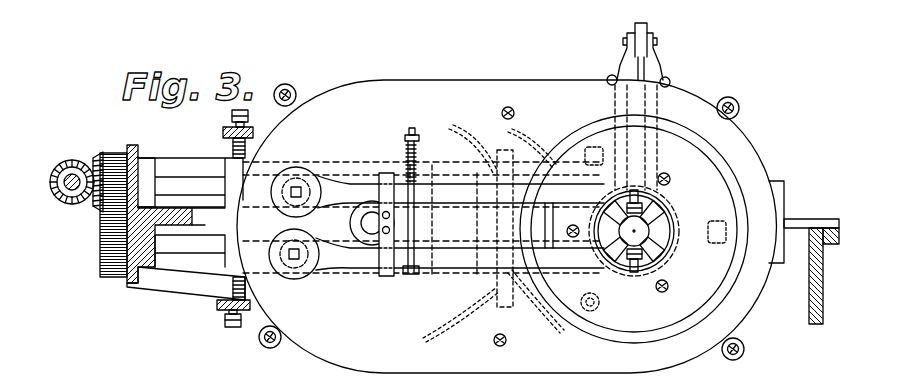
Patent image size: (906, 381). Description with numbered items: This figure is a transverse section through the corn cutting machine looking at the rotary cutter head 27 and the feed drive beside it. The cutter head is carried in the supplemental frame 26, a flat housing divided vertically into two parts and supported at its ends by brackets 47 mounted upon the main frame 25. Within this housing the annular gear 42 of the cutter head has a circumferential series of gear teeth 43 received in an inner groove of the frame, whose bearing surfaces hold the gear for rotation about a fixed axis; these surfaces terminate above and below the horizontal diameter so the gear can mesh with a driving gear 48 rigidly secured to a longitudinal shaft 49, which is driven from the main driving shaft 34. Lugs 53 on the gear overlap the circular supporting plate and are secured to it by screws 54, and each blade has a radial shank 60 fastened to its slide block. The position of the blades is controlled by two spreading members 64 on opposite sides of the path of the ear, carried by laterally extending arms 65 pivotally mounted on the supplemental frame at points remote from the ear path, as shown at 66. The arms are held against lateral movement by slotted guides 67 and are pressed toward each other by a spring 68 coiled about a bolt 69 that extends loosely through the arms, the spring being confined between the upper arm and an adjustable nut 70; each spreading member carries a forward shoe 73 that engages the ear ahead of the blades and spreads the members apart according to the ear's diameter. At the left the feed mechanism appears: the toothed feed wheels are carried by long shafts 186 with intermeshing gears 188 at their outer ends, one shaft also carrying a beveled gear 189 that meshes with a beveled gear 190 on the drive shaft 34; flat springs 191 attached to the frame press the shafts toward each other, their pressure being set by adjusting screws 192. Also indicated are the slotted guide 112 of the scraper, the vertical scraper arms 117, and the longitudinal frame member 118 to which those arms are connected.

The main frame 25 is at (147, 282).
The supplemental frame 26 is at (634, 229).
The rotary cutter head 27 is at (740, 168).
The main driving shaft 34 is at (61, 205).
The annular gear 42 is at (558, 323).
The gear teeth 43 is at (526, 310).
The brackets 47 is at (809, 213).
The driving gear 48 is at (461, 241).
The longitudinal shaft 49 is at (360, 222).
The lugs 53 is at (587, 156).
The screws 54 is at (583, 296).
The radial shank 60 is at (650, 247).
The spreading members 64 is at (648, 202).
The laterally extending arms 65 is at (456, 258).
The pivot points 66 is at (298, 188).
The slotted guides 67 is at (385, 172).
The spring 68 is at (427, 161).
The bolt 69 is at (485, 225).
The adjustable nut 70 is at (415, 138).
The shoe 73 is at (652, 222).
The slotted guide 112 is at (507, 152).
The arms 117 is at (653, 67).
The longitudinal frame member 118 is at (648, 25).
The shafts 186 is at (189, 181).
The intermeshing gears 188 is at (118, 157).
The beveled gear 189 is at (97, 151).
The beveled gear 190 is at (57, 160).
The flat springs 191 is at (167, 157).
The adjusting screws 192 is at (244, 117).